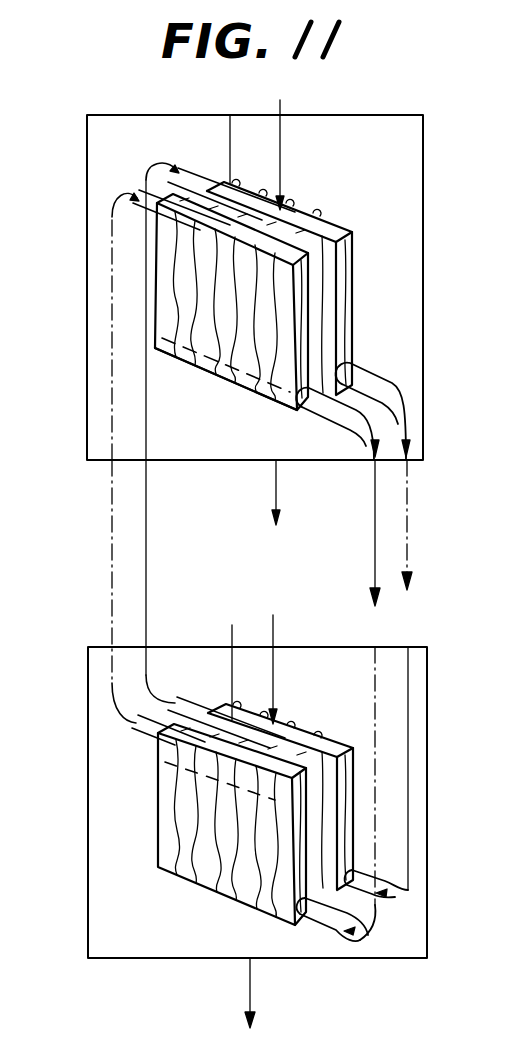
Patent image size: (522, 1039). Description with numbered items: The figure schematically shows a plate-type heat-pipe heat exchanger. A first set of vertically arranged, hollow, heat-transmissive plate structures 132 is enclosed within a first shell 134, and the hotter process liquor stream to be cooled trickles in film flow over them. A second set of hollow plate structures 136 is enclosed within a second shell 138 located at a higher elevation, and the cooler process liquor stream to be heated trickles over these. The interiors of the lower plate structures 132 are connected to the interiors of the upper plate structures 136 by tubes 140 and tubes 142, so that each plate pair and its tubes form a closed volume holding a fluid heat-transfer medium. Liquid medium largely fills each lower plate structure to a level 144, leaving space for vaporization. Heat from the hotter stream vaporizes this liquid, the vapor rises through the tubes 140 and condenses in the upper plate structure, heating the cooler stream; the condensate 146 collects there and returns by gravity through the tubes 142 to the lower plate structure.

The first set of hollow heat-transmissive plate structures 132 is at (345, 800).
The first shell 134 is at (97, 840).
The second set of hollow heat-transmissive plate structures 136 is at (340, 296).
The second shell 138 is at (423, 202).
The tubes 140 is at (112, 212).
The tubes 142 is at (330, 403).
The level 144 is at (180, 756).
The condensate 146 is at (232, 385).